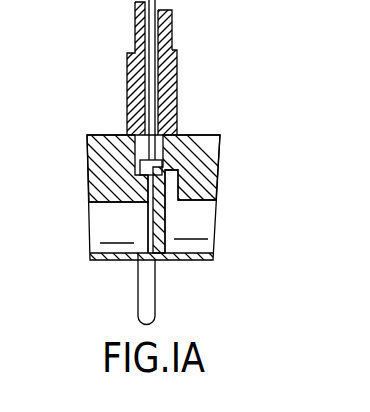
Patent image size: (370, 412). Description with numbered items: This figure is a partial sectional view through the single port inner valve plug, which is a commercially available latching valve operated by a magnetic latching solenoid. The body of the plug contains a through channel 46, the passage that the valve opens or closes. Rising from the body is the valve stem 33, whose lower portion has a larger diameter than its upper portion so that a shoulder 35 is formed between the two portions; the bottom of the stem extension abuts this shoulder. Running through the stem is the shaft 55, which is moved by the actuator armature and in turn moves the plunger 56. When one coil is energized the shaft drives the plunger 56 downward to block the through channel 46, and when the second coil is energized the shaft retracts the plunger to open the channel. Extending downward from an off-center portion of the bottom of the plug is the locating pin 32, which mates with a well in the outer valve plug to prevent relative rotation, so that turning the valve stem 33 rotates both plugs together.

The locating pin 32 is at (200, 134).
The valve stem 33 is at (178, 79).
The shoulder 35 is at (177, 54).
The through channel 46 is at (148, 178).
The shaft 55 is at (152, 88).
The plunger 56 is at (140, 162).